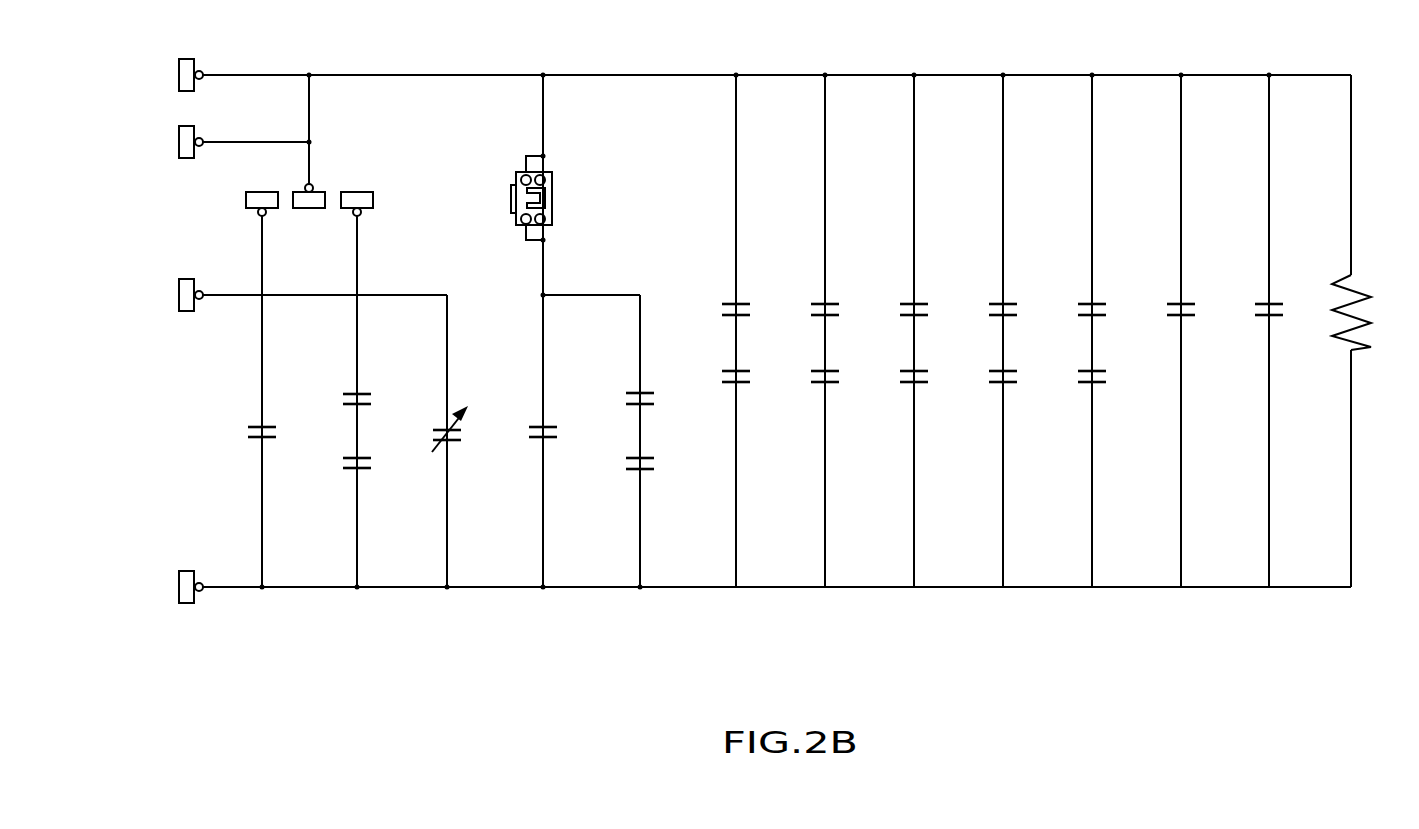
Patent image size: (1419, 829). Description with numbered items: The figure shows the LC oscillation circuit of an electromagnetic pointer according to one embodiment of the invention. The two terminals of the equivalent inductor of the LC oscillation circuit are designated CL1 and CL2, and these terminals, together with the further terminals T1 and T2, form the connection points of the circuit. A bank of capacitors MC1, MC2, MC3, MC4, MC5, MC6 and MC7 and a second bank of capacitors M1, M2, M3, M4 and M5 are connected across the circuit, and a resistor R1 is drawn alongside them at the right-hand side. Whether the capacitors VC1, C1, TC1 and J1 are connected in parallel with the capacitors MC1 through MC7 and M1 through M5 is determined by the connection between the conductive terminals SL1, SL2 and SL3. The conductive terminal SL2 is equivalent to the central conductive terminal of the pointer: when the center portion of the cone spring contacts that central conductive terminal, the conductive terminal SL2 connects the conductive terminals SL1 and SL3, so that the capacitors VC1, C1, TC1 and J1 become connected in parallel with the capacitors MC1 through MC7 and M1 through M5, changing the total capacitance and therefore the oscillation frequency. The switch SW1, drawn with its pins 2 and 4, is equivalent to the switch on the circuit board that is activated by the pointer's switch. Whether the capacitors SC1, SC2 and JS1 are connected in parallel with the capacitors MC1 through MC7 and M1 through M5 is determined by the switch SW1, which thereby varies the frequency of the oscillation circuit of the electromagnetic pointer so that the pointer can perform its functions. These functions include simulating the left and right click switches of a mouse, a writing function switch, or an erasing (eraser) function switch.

The terminal of the equivalent inductor CL1 is at (166, 75).
The first terminal T1 is at (169, 142).
The second terminal T2 is at (168, 295).
The terminal of the equivalent inductor CL2 is at (165, 588).
The conductive terminal SL1 is at (244, 218).
The conductive terminal SL2 is at (310, 214).
The conductive terminal SL3 is at (379, 218).
The switch SW1 is at (557, 198).
The switch pin 2 is at (526, 152).
The switch pin 4 is at (526, 244).
The capacitor TC1 is at (239, 431).
The capacitor C1 is at (343, 397).
The capacitor J1 is at (343, 462).
The capacitor VC1 is at (428, 429).
The capacitor SC1 is at (522, 432).
The capacitor SC2 is at (618, 401).
The capacitor JS1 is at (617, 464).
The capacitor MC1 is at (712, 330).
The capacitor MC2 is at (800, 330).
The capacitor MC3 is at (889, 330).
The capacitor MC4 is at (978, 330).
The capacitor MC5 is at (1066, 330).
The capacitor MC6 is at (1156, 330).
The capacitor MC7 is at (1245, 330).
The capacitor M1 is at (716, 377).
The capacitor M2 is at (804, 377).
The capacitor M3 is at (893, 377).
The capacitor M4 is at (982, 377).
The capacitor M5 is at (1071, 377).
The resistor R1 is at (1372, 312).